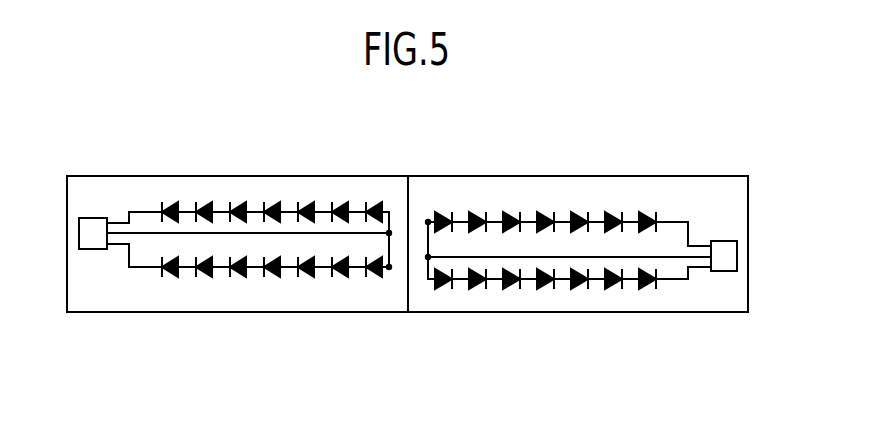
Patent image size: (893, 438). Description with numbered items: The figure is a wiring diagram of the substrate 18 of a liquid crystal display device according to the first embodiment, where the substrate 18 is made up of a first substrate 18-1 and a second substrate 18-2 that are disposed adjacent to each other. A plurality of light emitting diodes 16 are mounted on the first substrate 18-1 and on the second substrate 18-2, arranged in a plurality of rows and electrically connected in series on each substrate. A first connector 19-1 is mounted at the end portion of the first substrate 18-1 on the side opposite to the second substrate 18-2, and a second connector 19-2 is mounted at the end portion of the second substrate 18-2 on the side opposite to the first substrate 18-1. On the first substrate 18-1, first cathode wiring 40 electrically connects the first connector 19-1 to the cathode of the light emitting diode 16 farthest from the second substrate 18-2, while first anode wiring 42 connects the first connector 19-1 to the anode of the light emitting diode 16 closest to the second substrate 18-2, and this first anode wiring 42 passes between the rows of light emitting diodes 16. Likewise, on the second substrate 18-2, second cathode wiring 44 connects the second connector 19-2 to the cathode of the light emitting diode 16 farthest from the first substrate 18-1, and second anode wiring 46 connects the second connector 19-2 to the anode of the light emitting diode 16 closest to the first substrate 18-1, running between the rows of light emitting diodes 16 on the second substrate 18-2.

The light emitting diode 16 is at (207, 210).
The substrate 18 is at (498, 370).
The first substrate 18-1 is at (345, 300).
The second substrate 18-2 is at (465, 300).
The first connector 19-1 is at (93, 241).
The second connector 19-2 is at (723, 261).
The first cathode wiring 40 is at (143, 210).
The first anode wiring 42 is at (360, 232).
The second cathode wiring 44 is at (672, 221).
The second anode wiring 46 is at (563, 255).